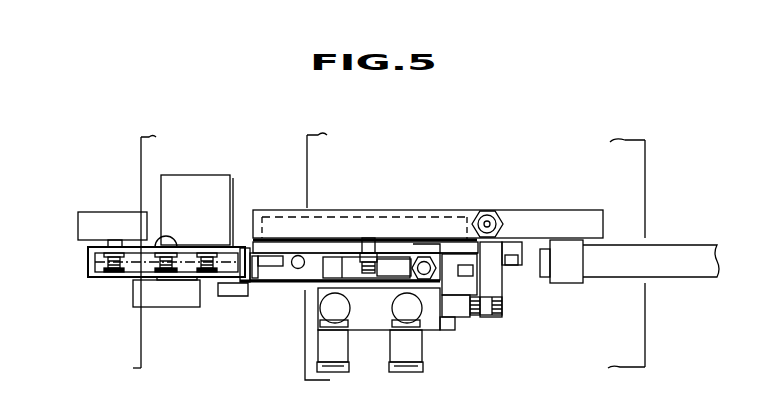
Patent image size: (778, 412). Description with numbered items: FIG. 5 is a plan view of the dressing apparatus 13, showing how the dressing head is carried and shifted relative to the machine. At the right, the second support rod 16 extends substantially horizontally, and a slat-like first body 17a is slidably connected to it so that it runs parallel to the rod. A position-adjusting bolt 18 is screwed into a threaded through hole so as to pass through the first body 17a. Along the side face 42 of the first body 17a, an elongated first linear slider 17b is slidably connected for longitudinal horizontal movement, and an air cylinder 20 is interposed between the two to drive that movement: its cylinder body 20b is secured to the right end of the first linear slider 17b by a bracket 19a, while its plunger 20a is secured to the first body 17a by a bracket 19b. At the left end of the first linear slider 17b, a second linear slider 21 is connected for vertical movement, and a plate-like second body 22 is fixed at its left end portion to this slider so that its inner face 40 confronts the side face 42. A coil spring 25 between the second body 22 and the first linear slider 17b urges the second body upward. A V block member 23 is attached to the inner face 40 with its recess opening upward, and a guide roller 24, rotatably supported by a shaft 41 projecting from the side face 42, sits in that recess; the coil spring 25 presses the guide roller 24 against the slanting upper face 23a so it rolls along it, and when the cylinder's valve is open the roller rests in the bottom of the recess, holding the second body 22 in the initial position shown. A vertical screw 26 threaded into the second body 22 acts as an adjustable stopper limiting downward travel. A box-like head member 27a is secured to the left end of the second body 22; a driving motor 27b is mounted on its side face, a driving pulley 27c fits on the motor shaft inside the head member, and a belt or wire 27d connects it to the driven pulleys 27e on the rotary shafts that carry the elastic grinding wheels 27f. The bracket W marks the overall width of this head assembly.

The positioning mechanism 13 is at (307, 152).
The second support rod 16 is at (676, 248).
The first body 17a is at (567, 217).
The first linear slider 17b is at (325, 245).
The bolt 18 is at (492, 218).
The bracket 19a is at (452, 322).
The bracket 19b is at (498, 280).
The air cylinder 20 is at (358, 340).
The plunger 20a is at (462, 312).
The cylinder body 20b is at (370, 322).
The second linear slider 21 is at (262, 253).
The second body 22 is at (281, 283).
The V block member 23 is at (348, 270).
The slanting upper face 23a is at (400, 260).
The guide roller 24 is at (352, 255).
The coil spring 25 is at (304, 247).
The vertical screw 26 is at (427, 275).
The head member 27a is at (110, 278).
The driving motor 27b is at (203, 175).
The driving pulley 27c is at (207, 278).
The belt or wire 27d is at (185, 248).
The driven pulley 27e is at (152, 247).
The elastic grinding wheel 27f is at (110, 222).
The inner face 40 is at (313, 273).
The shaft 41 is at (385, 253).
The side face 42 is at (420, 247).
The width W is at (141, 358).